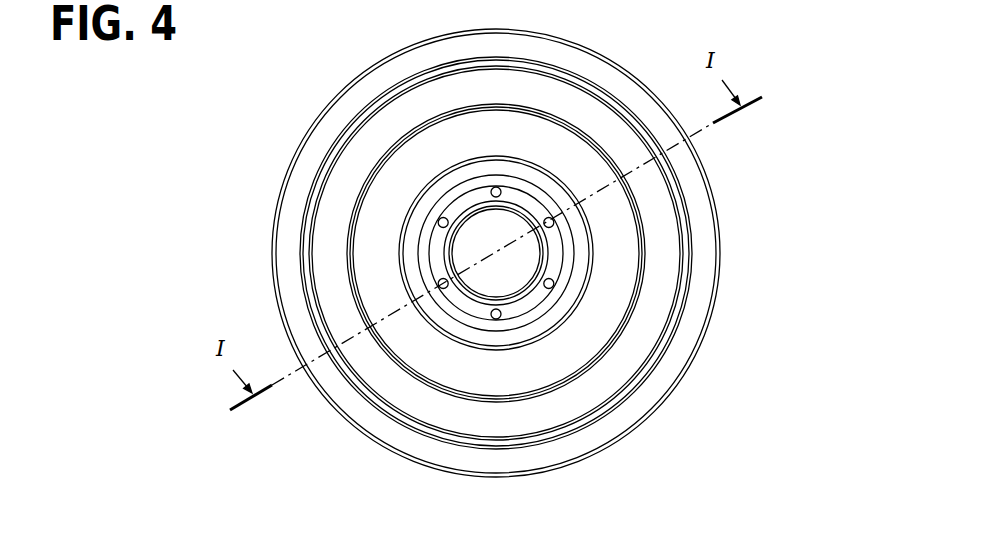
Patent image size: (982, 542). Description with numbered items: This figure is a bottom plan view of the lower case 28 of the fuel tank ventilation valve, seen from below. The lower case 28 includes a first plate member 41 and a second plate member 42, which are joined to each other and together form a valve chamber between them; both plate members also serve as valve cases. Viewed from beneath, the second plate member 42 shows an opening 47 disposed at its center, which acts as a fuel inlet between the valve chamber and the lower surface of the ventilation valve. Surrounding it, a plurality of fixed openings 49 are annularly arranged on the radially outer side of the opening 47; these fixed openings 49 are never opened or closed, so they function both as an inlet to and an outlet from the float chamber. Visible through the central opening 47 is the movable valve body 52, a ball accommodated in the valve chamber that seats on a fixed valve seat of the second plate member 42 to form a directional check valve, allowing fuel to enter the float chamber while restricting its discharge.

The lower case 28 is at (306, 91).
The first plate member 41 is at (695, 345).
The second plate member 42 is at (607, 353).
The opening 47 is at (467, 223).
The fixed opening 49 is at (440, 222).
The valve body 52 is at (520, 258).